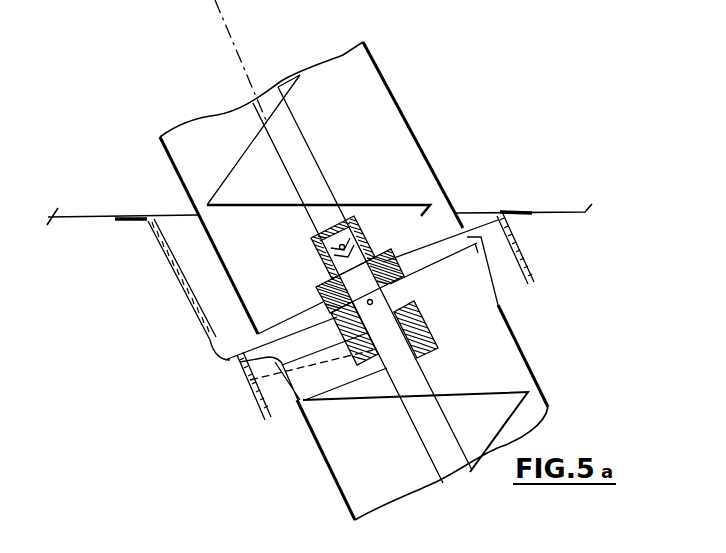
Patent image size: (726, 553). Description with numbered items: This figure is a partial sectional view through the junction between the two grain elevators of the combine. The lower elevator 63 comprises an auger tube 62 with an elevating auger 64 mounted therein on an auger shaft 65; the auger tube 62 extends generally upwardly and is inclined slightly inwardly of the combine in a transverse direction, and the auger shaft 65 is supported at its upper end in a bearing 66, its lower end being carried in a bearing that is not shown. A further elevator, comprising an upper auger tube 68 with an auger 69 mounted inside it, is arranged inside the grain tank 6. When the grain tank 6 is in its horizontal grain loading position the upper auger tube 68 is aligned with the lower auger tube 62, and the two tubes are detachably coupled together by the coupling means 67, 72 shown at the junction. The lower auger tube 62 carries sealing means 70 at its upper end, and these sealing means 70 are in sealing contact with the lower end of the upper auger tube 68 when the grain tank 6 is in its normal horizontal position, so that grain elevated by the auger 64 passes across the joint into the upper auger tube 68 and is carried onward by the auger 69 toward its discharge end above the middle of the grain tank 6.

The grain tank 6 is at (93, 222).
The auger tube 62 is at (549, 397).
The elevator 63 is at (316, 450).
The elevating auger 64 is at (519, 392).
The auger shaft 65 is at (426, 390).
The bearing 66 is at (420, 325).
The coupling means 67 is at (418, 302).
The auger tube 68 is at (416, 143).
The auger 69 is at (403, 205).
The sealing means 70 is at (499, 229).
The coupling means 72 is at (400, 240).